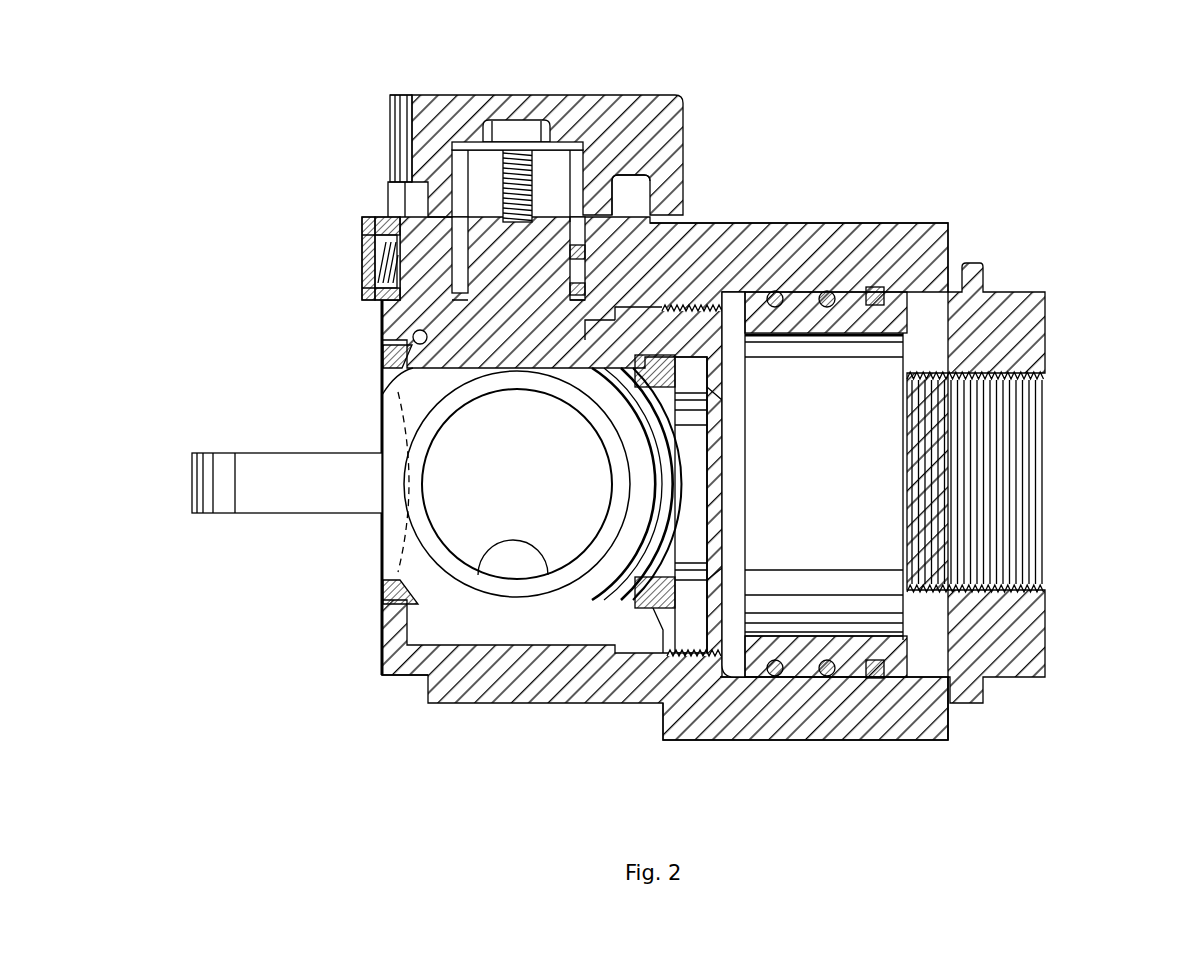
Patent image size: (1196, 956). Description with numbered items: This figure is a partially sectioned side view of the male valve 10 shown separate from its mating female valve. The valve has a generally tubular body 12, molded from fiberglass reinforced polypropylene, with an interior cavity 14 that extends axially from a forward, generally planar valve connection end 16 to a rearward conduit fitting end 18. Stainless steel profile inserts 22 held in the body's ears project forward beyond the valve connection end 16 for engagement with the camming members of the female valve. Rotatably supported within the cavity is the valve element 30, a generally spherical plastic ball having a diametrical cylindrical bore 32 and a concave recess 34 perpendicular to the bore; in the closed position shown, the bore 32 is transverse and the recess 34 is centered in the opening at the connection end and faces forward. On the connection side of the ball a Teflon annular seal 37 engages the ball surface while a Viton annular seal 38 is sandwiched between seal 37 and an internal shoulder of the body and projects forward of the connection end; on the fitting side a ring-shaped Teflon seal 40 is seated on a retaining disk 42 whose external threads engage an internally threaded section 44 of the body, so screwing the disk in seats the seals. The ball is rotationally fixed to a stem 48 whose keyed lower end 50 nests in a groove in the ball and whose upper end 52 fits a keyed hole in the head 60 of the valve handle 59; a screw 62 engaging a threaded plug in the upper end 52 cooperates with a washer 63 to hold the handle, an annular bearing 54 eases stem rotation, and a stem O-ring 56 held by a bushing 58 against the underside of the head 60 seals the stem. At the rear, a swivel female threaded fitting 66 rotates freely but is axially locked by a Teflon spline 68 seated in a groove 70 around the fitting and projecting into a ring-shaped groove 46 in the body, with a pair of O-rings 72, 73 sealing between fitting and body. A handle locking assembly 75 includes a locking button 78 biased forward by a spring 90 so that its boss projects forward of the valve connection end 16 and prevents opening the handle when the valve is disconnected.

The male valve 10 is at (1082, 168).
The body 12 is at (741, 716).
The interior cavity 14 is at (664, 568).
The valve connection end 16 is at (380, 655).
The conduit fitting end 18 is at (955, 721).
The profile insert 22 is at (215, 480).
The valve element 30 is at (452, 590).
The bore 32 is at (562, 555).
The concave recess 34 is at (380, 535).
The annular seal 37 is at (396, 341).
The annular seal 38 is at (380, 592).
The annular seal 40 is at (726, 342).
The retaining disk 42 is at (706, 345).
The internally threaded section 44 is at (686, 307).
The ring-shaped groove 46 is at (882, 287).
The stem 48 is at (410, 148).
The keyed lower end 50 is at (392, 402).
The upper end 52 is at (477, 168).
The annular bearing 54 is at (520, 263).
The stem O-ring 56 is at (586, 232).
The bushing 58 is at (627, 180).
The valve handle 59 is at (384, 86).
The head 60 is at (446, 100).
The screw 62 is at (521, 122).
The washer 63 is at (566, 142).
The female threaded fitting 66 is at (1020, 302).
The spline 68 is at (950, 252).
The groove 70 is at (870, 658).
The O-ring 72 is at (778, 292).
The O-ring 73 is at (830, 292).
The handle locking assembly 75 is at (322, 255).
The locking button 78 is at (365, 284).
The spring 90 is at (365, 228).